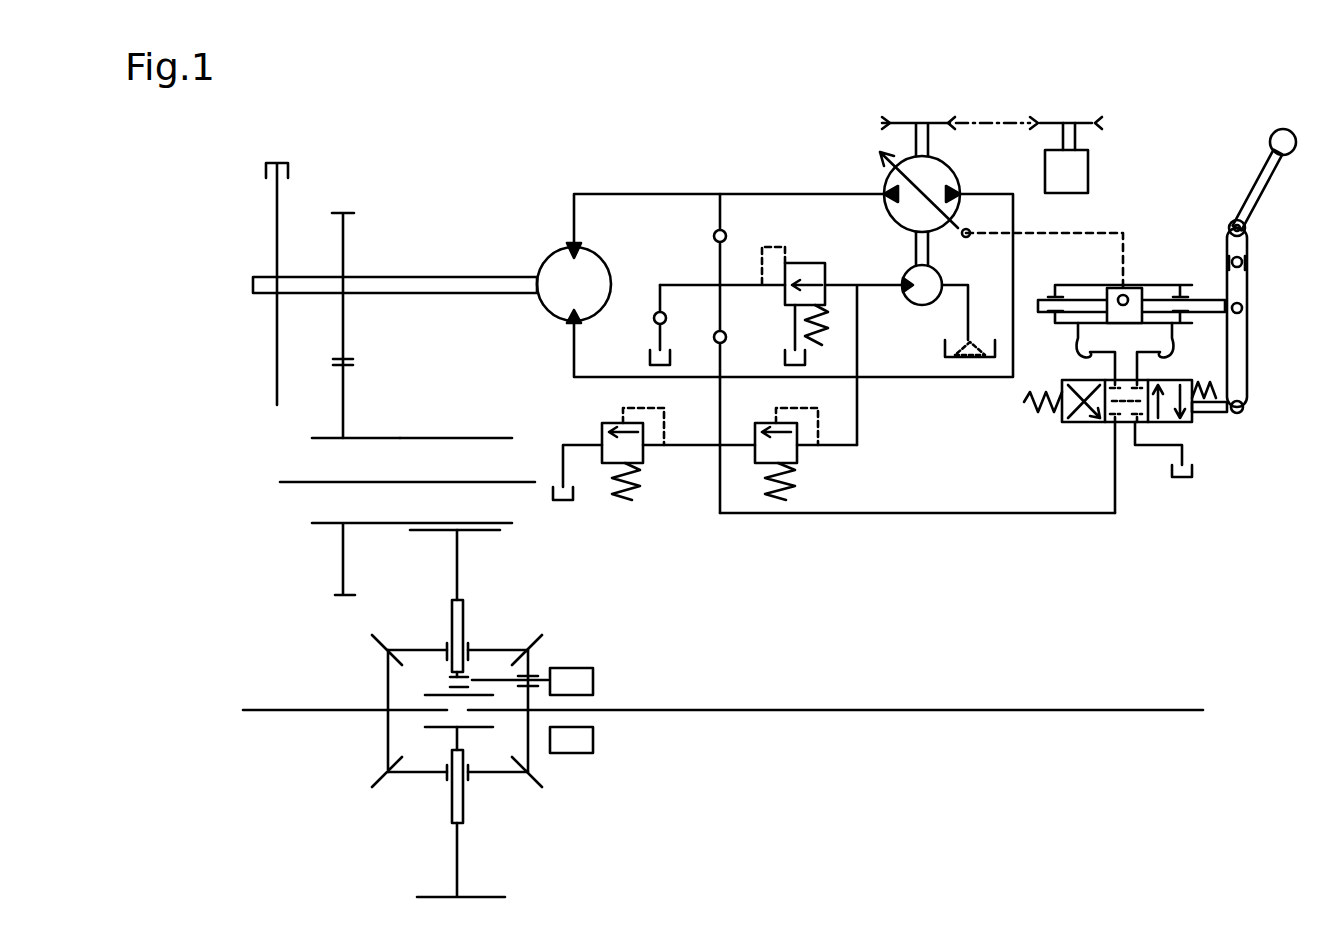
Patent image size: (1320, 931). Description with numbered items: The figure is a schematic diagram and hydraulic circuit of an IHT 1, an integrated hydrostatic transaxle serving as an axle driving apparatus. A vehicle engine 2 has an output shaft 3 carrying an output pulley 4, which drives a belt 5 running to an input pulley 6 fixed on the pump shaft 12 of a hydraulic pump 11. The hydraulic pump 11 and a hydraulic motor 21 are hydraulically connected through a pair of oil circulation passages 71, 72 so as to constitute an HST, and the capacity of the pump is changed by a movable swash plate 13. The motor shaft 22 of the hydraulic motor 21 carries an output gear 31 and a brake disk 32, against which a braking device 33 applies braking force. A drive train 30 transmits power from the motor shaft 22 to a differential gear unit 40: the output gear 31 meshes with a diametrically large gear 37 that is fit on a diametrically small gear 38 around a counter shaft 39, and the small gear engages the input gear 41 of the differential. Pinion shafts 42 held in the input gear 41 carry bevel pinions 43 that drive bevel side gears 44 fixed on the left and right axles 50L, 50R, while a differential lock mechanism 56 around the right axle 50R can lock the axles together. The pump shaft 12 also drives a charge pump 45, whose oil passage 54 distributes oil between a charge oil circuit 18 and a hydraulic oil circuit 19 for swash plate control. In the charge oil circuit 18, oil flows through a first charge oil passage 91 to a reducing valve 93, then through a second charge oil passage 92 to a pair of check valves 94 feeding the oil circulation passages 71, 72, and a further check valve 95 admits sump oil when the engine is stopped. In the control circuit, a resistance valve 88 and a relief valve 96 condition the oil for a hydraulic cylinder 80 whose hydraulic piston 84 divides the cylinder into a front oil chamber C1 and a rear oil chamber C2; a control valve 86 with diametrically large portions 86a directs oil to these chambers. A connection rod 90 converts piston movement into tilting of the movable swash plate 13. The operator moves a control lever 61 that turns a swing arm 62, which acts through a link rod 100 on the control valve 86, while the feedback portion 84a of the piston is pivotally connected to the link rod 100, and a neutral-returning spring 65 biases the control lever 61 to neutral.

The IHT 1 is at (1183, 823).
The vehicle engine 2 is at (1080, 180).
The output shaft 3 is at (1070, 140).
The output pulley 4 is at (1100, 123).
The belt 5 is at (998, 125).
The input pulley 6 is at (888, 124).
The hydraulic pump 11 is at (890, 213).
The pump shaft 12 is at (916, 247).
The movable swash plate 13 is at (888, 177).
The charge oil circuit 18 is at (744, 237).
The hydraulic oil circuit 19 is at (898, 370).
The hydraulic motor 21 is at (540, 258).
The motor shaft 22 is at (487, 277).
The drive train 30 is at (359, 357).
The output gear 31 is at (351, 306).
The brake disk 32 is at (277, 368).
The braking device 33 is at (310, 191).
The diametrically large gear 37 is at (343, 412).
The diametrically small gear 38 is at (448, 438).
The counter shaft 39 is at (319, 482).
The differential gear unit 40 is at (472, 724).
The input gear 41 is at (458, 863).
The pinion shaft 42 is at (462, 620).
The bevel pinion 43 is at (415, 650).
The bevel side gear 44 is at (388, 730).
The charge pump 45 is at (940, 347).
The left axle 50L is at (296, 711).
The right axle 50R is at (797, 713).
The oil passage 54 is at (903, 290).
The differential lock mechanism 56 is at (612, 677).
The control lever 61 is at (1265, 166).
The swing arm 62 is at (1228, 242).
The neutral-returning spring 65 is at (1040, 398).
The oil circulation passage 71 is at (675, 194).
The oil circulation passage 72 is at (685, 377).
The hydraulic cylinder 80 is at (1131, 256).
The hydraulic piston 84 is at (1107, 288).
The feedback portion 84a is at (1205, 300).
The control valve 86 is at (1088, 424).
The diametrically large portion 86a is at (1198, 422).
The resistance valve 88 is at (813, 472).
The connection rod 90 is at (1068, 233).
The first charge oil passage 91 is at (843, 290).
The second charge oil passage 92 is at (745, 285).
The reducing valve 93 is at (772, 298).
The check valve 94 is at (712, 237).
The check valve 95 is at (655, 318).
The relief valve 96 is at (662, 466).
The link rod 100 is at (1243, 386).
The front oil chamber C1 is at (1078, 362).
The rear oil chamber C2 is at (1168, 360).